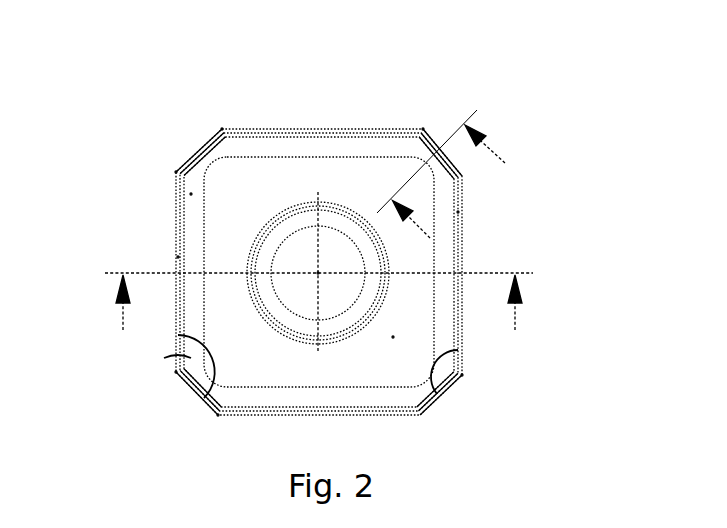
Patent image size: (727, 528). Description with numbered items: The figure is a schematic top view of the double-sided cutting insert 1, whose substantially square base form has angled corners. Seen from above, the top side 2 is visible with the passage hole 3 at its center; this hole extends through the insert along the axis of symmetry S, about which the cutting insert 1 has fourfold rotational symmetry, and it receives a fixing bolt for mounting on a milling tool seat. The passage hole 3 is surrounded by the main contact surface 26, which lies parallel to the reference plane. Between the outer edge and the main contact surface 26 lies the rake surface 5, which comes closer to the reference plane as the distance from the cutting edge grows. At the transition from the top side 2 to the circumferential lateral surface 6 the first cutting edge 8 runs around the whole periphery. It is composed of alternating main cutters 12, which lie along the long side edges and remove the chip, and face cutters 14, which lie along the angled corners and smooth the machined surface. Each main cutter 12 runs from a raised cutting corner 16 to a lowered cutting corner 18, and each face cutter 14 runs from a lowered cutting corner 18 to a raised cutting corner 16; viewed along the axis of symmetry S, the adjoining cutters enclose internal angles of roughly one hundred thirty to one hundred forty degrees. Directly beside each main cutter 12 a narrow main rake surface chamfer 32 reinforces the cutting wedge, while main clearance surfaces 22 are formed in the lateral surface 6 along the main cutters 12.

The cutting insert 1 is at (118, 78).
The top side 2 is at (248, 180).
The passage hole 3 is at (297, 258).
The rake surface 5 is at (190, 193).
The circumferential lateral surface 6 is at (168, 257).
The first cutting edge 8 is at (392, 130).
The main cutter 12 is at (180, 236).
The face cutter 14 is at (197, 152).
The raised cutting corner 16 is at (181, 171).
The lowered cutting corner 18 is at (226, 132).
The main clearance surface 22 is at (251, 130).
The main contact surface 26 is at (393, 337).
The main rake surface chamfer 32 is at (458, 212).
The axis of symmetry S is at (318, 274).